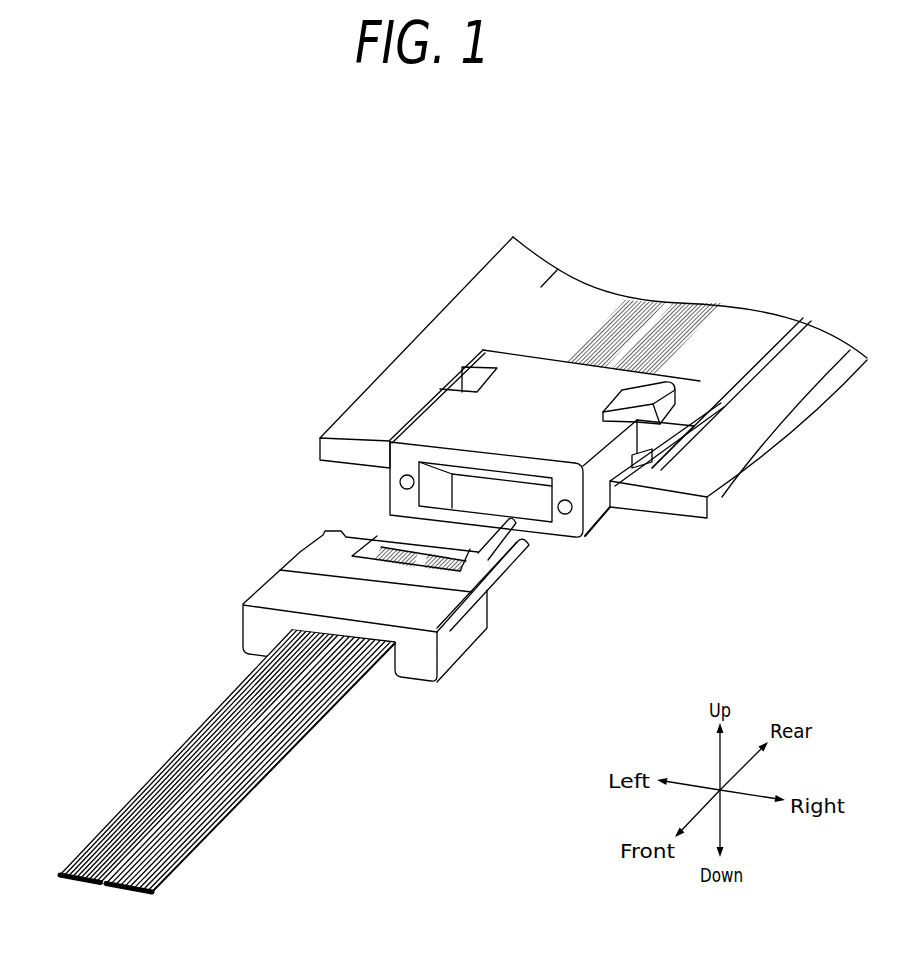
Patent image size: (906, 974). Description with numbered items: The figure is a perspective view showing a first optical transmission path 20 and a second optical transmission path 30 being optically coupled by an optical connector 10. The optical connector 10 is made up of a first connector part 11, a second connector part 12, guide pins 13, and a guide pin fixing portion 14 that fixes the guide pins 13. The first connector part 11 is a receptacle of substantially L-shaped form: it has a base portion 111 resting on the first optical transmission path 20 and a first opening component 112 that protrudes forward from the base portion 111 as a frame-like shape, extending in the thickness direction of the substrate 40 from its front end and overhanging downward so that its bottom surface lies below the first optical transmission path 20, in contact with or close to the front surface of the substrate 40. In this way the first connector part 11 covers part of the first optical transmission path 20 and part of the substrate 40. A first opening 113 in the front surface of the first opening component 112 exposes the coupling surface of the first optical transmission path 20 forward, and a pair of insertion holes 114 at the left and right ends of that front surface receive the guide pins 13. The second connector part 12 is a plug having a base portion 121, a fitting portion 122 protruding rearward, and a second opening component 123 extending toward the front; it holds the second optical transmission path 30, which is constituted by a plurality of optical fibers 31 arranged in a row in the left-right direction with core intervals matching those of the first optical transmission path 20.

The optical connector 10 is at (281, 318).
The first connector part 11 is at (565, 466).
The base portion 111 is at (665, 408).
The first opening component 112 is at (594, 500).
The first opening 113 is at (587, 539).
The insertion holes 114 is at (402, 477).
The second connector part 12 is at (394, 522).
The base portion 121 is at (487, 570).
The fitting portion 122 is at (517, 530).
The second opening component 123 is at (457, 592).
The guide pins 13 is at (513, 522).
The guide pin fixing portion 14 is at (275, 594).
The first optical transmission path 20 is at (736, 305).
The second optical transmission path 30 is at (226, 784).
The optical fibers 31 is at (73, 883).
The substrate 40 is at (723, 491).